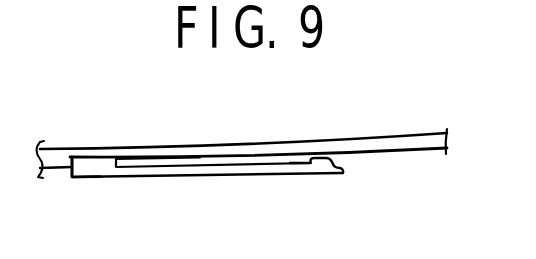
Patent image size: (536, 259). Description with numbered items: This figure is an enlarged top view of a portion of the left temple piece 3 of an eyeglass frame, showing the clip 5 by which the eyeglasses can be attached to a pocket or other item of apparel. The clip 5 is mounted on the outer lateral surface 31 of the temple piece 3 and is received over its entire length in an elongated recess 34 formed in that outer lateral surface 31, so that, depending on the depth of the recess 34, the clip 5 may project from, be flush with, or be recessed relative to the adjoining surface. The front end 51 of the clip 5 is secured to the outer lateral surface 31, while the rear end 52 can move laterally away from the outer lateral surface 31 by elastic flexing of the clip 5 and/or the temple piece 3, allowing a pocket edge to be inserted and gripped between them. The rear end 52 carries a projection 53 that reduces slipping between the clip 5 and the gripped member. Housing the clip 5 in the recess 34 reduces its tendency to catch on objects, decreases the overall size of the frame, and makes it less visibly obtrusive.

The temple piece 3 is at (368, 138).
The outer lateral surface 31 is at (408, 155).
The elongated recess 34 is at (182, 160).
The clip 5 is at (218, 175).
The front end 51 is at (90, 178).
The rear end 52 is at (341, 173).
The projection 53 is at (318, 160).